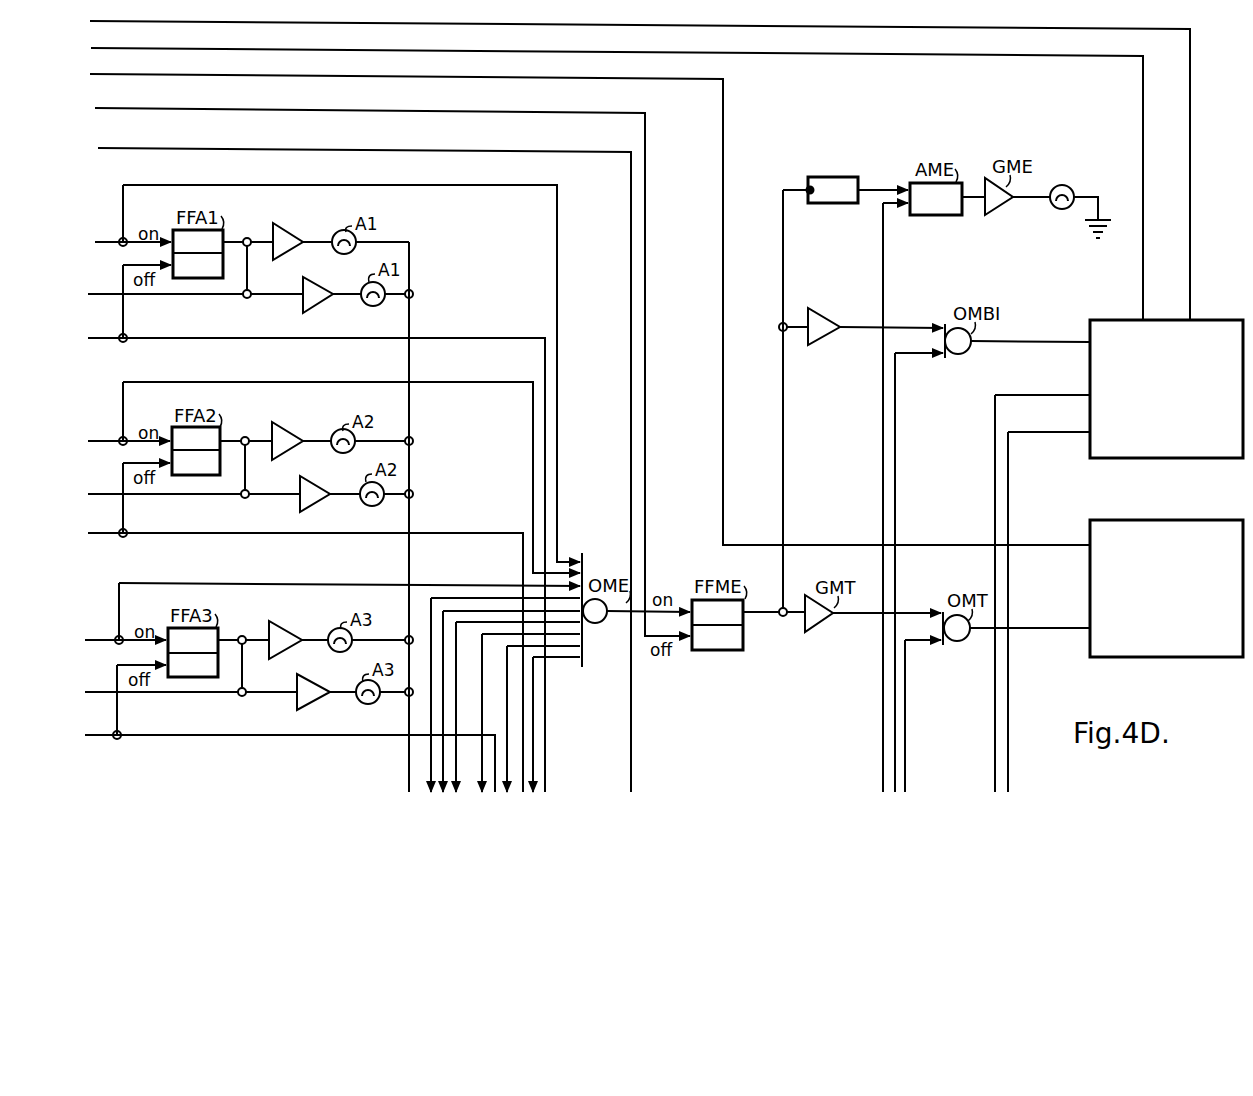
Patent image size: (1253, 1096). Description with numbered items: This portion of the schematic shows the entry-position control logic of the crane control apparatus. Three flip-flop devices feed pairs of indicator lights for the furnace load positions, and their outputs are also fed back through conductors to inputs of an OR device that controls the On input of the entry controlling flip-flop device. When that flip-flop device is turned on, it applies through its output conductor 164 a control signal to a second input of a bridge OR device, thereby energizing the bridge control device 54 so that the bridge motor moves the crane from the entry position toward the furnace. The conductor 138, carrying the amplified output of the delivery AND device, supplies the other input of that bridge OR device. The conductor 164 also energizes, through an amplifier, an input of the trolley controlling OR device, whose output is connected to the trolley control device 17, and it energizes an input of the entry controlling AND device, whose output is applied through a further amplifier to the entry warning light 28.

The entry warning light 28 is at (1058, 187).
The bridge control device 54 is at (1124, 318).
The trolley control device 17 is at (1120, 517).
The output conductor 164 is at (783, 413).
The conductor 138 is at (895, 415).